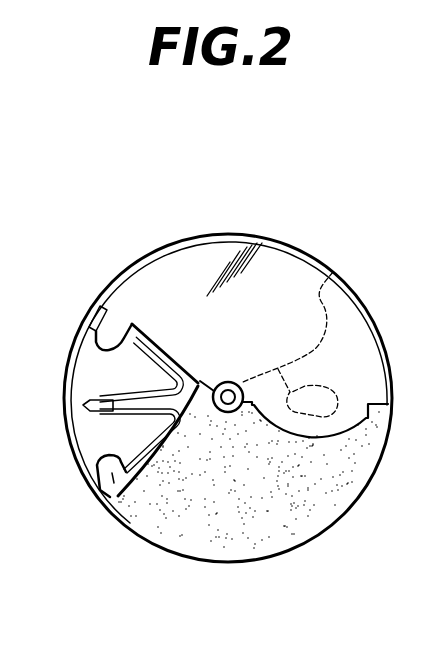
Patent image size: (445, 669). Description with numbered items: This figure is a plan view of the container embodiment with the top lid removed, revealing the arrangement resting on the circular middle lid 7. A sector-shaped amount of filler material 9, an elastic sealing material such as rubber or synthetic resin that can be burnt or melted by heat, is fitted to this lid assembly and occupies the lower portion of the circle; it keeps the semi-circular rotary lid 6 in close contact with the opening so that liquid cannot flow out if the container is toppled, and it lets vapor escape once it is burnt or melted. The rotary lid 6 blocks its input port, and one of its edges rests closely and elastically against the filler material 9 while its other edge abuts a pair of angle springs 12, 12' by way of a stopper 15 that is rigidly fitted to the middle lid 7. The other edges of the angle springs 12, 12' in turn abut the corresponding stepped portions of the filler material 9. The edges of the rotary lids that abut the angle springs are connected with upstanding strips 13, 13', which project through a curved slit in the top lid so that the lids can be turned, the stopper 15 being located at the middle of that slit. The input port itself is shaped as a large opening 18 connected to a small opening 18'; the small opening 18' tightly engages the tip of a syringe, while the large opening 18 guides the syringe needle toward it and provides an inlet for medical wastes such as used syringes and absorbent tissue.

The rotary lid 6 is at (267, 267).
The circular middle lid 7 is at (73, 450).
The filler material 9 is at (256, 522).
The angle spring 12 is at (149, 341).
The angle spring 12' is at (143, 486).
The strip 13 is at (74, 300).
The strip 13' is at (88, 489).
The stopper 15 is at (84, 404).
The large opening 18 is at (383, 358).
The small opening 18' is at (290, 344).